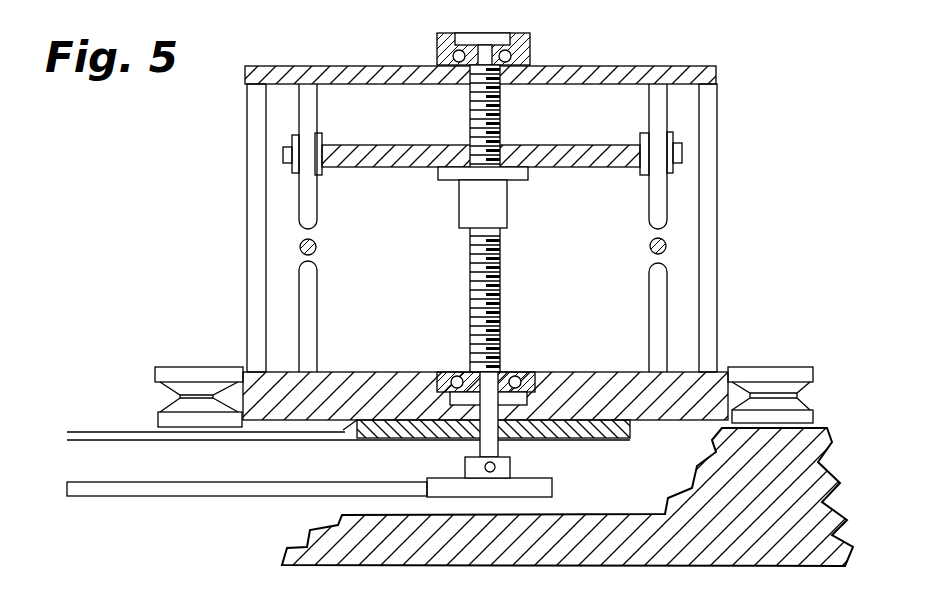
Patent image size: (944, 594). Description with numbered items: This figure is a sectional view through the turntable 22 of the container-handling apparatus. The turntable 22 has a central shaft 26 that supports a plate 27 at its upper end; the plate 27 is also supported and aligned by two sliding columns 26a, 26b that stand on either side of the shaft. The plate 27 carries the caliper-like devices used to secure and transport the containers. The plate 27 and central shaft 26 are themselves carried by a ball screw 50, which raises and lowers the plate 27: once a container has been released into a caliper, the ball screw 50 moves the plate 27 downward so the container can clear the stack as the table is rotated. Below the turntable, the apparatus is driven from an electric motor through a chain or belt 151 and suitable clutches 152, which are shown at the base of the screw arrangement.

The turntable 22 is at (600, 70).
The plate 27 is at (585, 148).
The ball screw 50 is at (507, 207).
The central shaft 26 is at (503, 322).
The sliding column 26a is at (323, 303).
The sliding column 26b is at (670, 322).
The chain or belt 151 is at (200, 497).
The clutches 152 is at (503, 467).